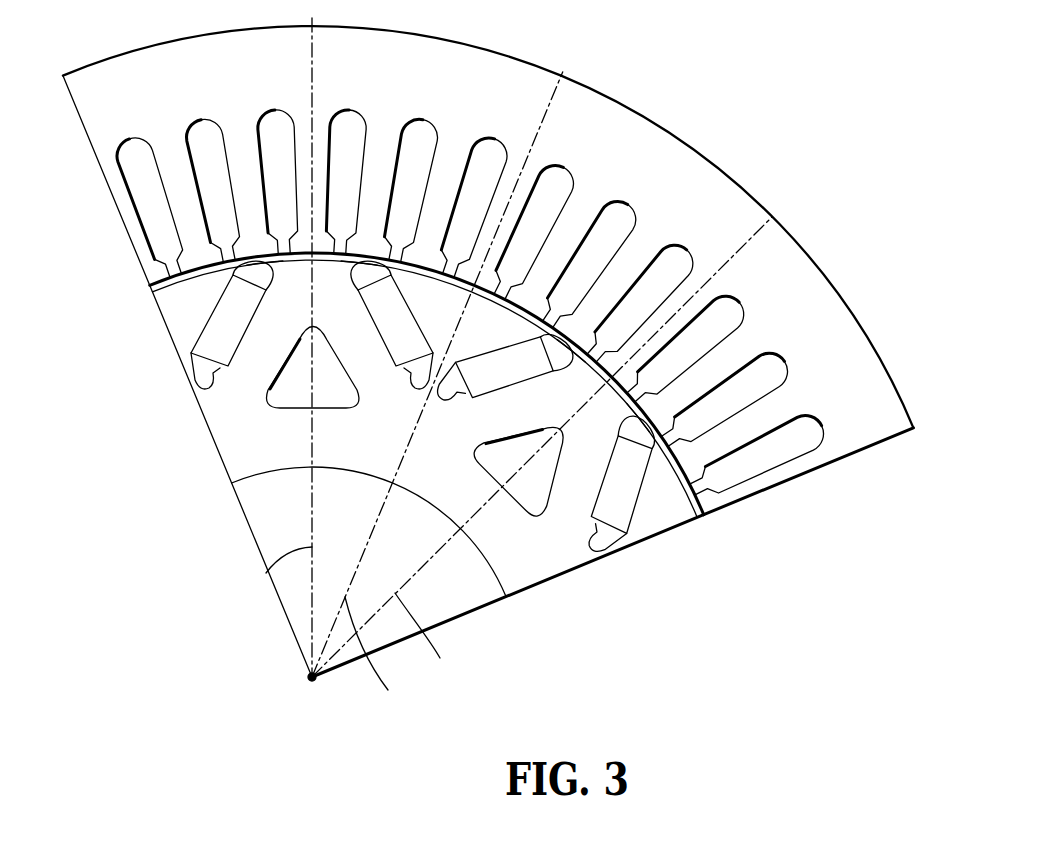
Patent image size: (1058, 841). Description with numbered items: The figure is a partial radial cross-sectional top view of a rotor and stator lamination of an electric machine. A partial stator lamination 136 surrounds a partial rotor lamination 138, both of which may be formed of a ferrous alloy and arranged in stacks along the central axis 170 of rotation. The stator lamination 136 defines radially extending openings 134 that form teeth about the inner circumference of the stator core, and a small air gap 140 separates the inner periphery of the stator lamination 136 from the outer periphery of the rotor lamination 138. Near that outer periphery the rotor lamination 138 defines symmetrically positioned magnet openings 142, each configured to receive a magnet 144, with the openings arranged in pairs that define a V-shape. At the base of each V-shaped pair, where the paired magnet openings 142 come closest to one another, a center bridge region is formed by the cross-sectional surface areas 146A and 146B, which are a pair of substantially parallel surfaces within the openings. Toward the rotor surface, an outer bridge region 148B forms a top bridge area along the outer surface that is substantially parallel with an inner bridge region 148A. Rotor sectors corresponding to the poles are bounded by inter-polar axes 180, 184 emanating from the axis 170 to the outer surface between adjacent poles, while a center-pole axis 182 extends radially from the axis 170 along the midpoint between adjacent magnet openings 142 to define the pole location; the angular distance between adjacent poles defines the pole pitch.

The radially extending openings 134 is at (272, 197).
The stator lamination 136 is at (835, 272).
The rotor lamination 138 is at (523, 574).
The air gap 140 is at (152, 288).
The magnet openings 142 is at (382, 330).
The magnet 144 is at (224, 318).
The cross-sectional surface area of the bridge region 146A is at (423, 370).
The cross-sectional surface area of the bridge region 146B is at (212, 392).
The inner bridge region 148A is at (260, 272).
The outer bridge region 148B is at (373, 252).
The axis of rotation 170 is at (312, 677).
The inter-polar axis 180 is at (440, 658).
The center-pole axis 182 is at (388, 690).
The inter-polar axis 184 is at (257, 578).